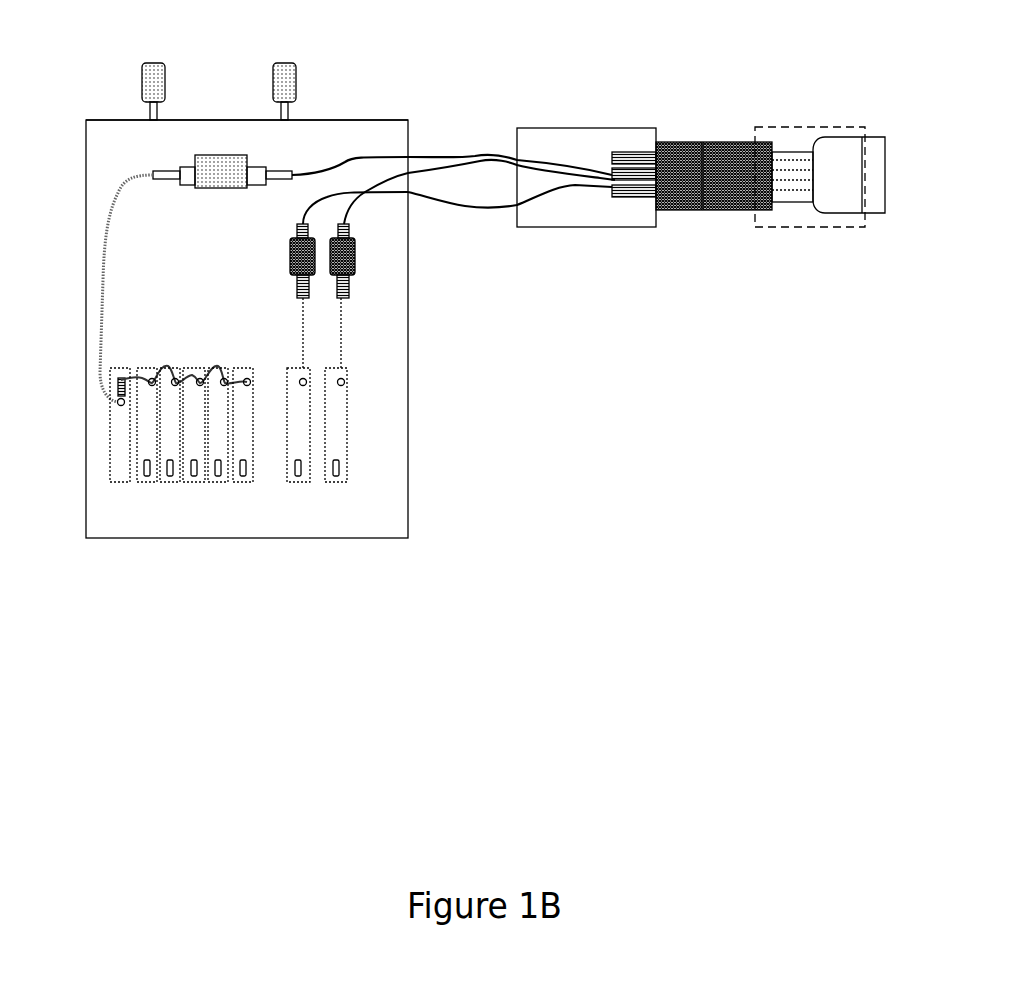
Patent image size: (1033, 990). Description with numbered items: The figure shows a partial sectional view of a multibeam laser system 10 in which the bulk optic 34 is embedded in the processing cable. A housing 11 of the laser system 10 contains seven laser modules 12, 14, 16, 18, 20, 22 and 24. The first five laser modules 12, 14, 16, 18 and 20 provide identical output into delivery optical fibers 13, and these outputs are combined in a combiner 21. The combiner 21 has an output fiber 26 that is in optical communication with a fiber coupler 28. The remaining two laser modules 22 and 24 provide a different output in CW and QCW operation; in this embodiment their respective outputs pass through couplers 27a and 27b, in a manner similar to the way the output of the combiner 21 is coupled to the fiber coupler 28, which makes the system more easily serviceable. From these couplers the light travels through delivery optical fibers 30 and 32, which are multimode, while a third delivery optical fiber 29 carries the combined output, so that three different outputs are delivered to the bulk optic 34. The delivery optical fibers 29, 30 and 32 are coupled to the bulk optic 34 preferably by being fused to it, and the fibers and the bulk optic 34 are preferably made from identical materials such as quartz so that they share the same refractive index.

The laser system 10 is at (222, 329).
The housing 11 is at (177, 120).
The laser module 12 is at (147, 482).
The delivery optical fibers 13 is at (177, 373).
The laser module 14 is at (170, 482).
The laser module 16 is at (194, 482).
The laser module 18 is at (218, 482).
The laser module 20 is at (242, 482).
The combiner 21 is at (113, 482).
The laser module 22 is at (300, 482).
The laser module 24 is at (340, 482).
The output fiber 26 is at (121, 190).
The coupler 27a is at (347, 277).
The coupler 27b is at (355, 255).
The fiber coupler 28 is at (223, 155).
The delivery optical fiber 29 is at (518, 160).
The delivery optical fiber 30 is at (487, 153).
The delivery optical fiber 32 is at (485, 207).
The bulk optic 34 is at (841, 135).